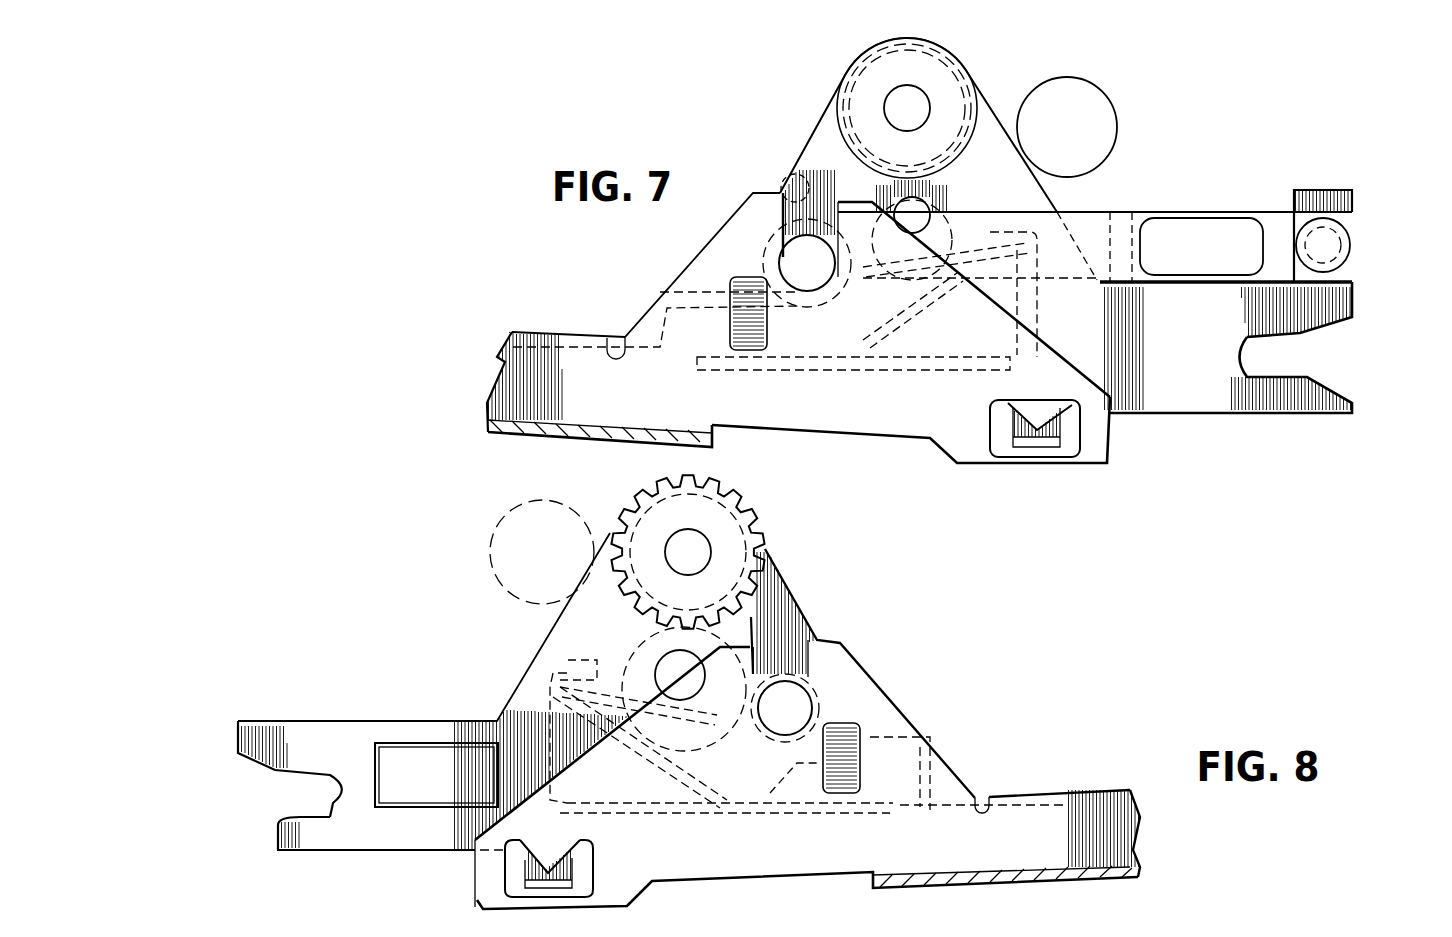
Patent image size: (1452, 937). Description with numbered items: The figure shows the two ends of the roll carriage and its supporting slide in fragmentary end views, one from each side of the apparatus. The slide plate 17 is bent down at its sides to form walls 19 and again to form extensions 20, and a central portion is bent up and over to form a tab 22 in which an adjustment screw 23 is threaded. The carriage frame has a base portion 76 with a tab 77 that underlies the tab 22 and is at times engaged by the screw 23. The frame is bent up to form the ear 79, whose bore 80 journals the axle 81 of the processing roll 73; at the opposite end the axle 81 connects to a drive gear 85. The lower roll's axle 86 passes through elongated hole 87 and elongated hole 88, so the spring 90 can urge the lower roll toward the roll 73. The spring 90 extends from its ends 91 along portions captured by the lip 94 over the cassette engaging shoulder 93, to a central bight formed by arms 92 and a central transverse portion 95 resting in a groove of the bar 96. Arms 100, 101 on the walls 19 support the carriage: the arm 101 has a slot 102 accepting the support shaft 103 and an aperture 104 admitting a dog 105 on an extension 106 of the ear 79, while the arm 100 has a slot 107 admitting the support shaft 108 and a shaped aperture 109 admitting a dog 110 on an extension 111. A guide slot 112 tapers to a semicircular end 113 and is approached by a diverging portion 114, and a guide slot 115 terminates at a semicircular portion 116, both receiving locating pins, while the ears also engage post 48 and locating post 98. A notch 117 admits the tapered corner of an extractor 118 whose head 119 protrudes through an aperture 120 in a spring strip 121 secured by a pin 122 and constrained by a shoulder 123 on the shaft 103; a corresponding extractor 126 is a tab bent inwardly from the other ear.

In FIG. 7, the plate 17 is at (568, 333).
In FIG. 8, the plate 17 is at (1030, 793).
In FIG. 7, the walls 19 is at (500, 378).
In FIG. 8, the walls 19 is at (1105, 828).
In FIG. 7, the extensions 20 is at (560, 440).
In FIG. 8, the extensions 20 is at (1060, 885).
In FIG. 7, the tab 22 is at (665, 300).
In FIG. 8, the tab 22 is at (880, 737).
In FIG. 7, the adjustment screw 23 is at (730, 330).
In FIG. 8, the adjustment screw 23 is at (862, 775).
In FIG. 7, the post 48 is at (1105, 97).
In FIG. 7, the processing roll 73 is at (838, 118).
In FIG. 8, the base portion 76 is at (729, 817).
In FIG. 8, the tab 77 is at (843, 812).
In FIG. 7, the ear 79 is at (992, 112).
In FIG. 7, the bore 80 is at (912, 92).
In FIG. 7, the axle 81 is at (915, 108).
In FIG. 8, the axle 81 is at (700, 540).
In FIG. 8, the drive gear 85 is at (748, 535).
In FIG. 7, the axle 86 is at (870, 187).
In FIG. 8, the axle 86 is at (673, 660).
In FIG. 8, the elongated hole 87 is at (660, 665).
In FIG. 7, the elongated hole 88 is at (925, 200).
In FIG. 7, the spring 90 is at (922, 320).
In FIG. 8, the spring 90 is at (668, 762).
In FIG. 7, the ends 91 is at (965, 238).
In FIG. 7, the arms 92 is at (990, 290).
In FIG. 8, the arms 92 is at (610, 725).
In FIG. 7, the cassette engaging shoulder 93 is at (1050, 285).
In FIG. 8, the cassette engaging shoulder 93 is at (548, 660).
In FIG. 7, the lip 94 is at (1035, 232).
In FIG. 8, the lip 94 is at (590, 680).
In FIG. 7, the central transverse portion 95 is at (865, 328).
In FIG. 8, the central transverse portion 95 is at (730, 790).
In FIG. 7, the bar 96 is at (847, 306).
In FIG. 8, the bar 96 is at (660, 800).
In FIG. 8, the locating post 98 is at (509, 512).
In FIG. 8, the arm 100 is at (875, 682).
In FIG. 7, the arm 101 is at (848, 430).
In FIG. 7, the slot 102 is at (782, 172).
In FIG. 7, the support shaft 103 is at (779, 250).
In FIG. 7, the aperture 104 is at (1078, 440).
In FIG. 7, the dog 105 is at (1040, 456).
In FIG. 7, the extension 106 is at (1013, 425).
In FIG. 8, the slot 107 is at (797, 640).
In FIG. 8, the support shaft 108 is at (798, 688).
In FIG. 8, the shaped aperture 109 is at (585, 862).
In FIG. 8, the dog 110 is at (500, 895).
In FIG. 8, the extension 111 is at (530, 865).
In FIG. 8, the guide slot 112 is at (300, 815).
In FIG. 8, the semicircular end 113 is at (346, 795).
In FIG. 8, the diverging portion 114 is at (255, 765).
In FIG. 7, the guide slot 115 is at (1290, 336).
In FIG. 7, the semicircular portion 116 is at (1265, 360).
In FIG. 7, the notch 117 is at (1290, 195).
In FIG. 7, the extractor 118 is at (1187, 238).
In FIG. 7, the head 119 is at (1160, 225).
In FIG. 7, the aperture 120 is at (1216, 222).
In FIG. 7, the spring strip 121 is at (1272, 212).
In FIG. 7, the pin 122 is at (1340, 238).
In FIG. 7, the shoulder 123 is at (820, 225).
In FIG. 8, the extractor 126 is at (460, 745).